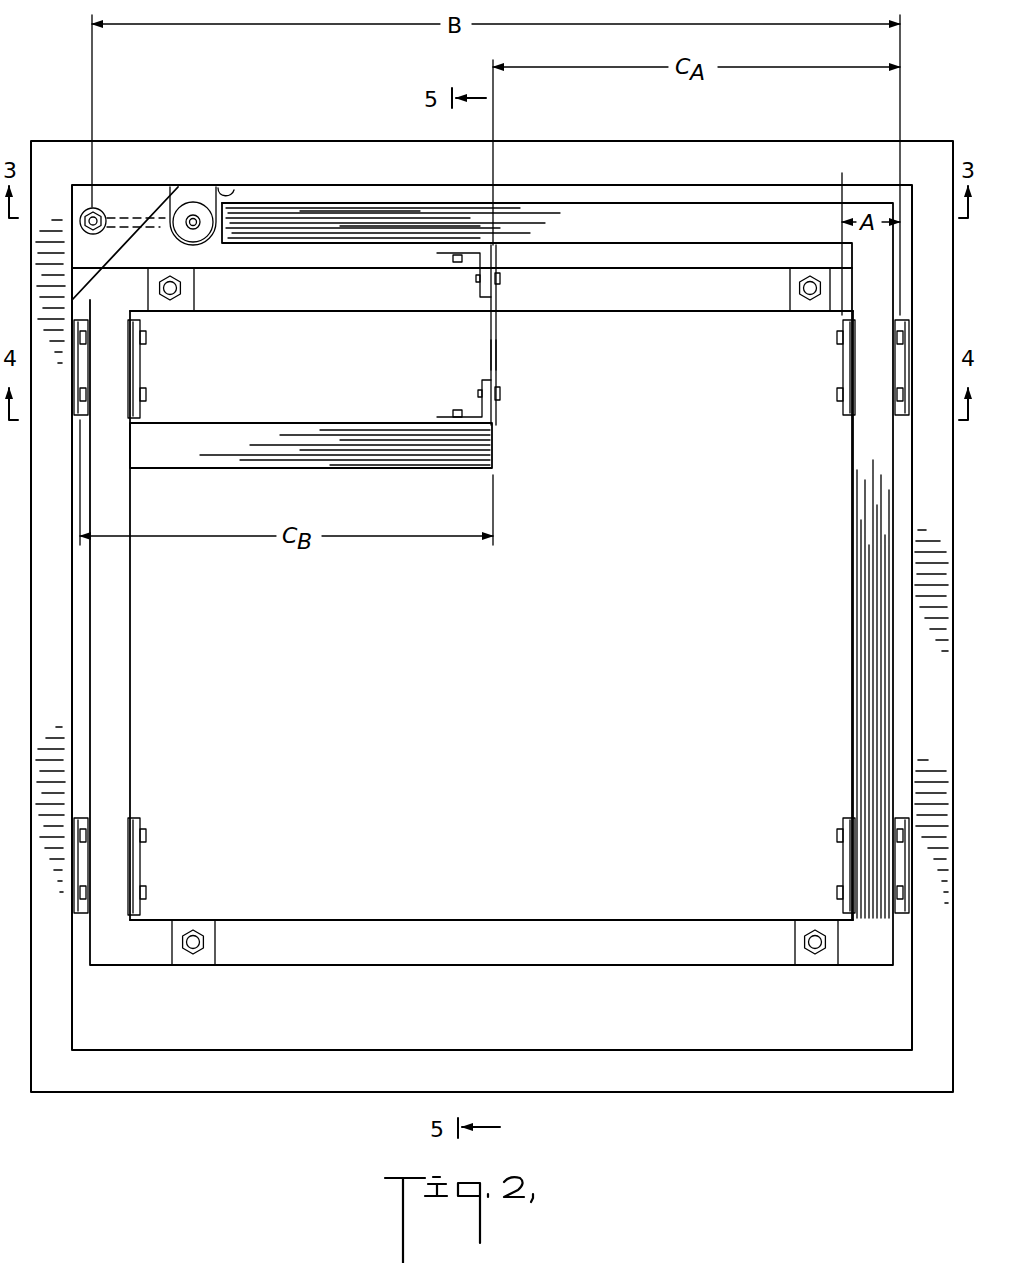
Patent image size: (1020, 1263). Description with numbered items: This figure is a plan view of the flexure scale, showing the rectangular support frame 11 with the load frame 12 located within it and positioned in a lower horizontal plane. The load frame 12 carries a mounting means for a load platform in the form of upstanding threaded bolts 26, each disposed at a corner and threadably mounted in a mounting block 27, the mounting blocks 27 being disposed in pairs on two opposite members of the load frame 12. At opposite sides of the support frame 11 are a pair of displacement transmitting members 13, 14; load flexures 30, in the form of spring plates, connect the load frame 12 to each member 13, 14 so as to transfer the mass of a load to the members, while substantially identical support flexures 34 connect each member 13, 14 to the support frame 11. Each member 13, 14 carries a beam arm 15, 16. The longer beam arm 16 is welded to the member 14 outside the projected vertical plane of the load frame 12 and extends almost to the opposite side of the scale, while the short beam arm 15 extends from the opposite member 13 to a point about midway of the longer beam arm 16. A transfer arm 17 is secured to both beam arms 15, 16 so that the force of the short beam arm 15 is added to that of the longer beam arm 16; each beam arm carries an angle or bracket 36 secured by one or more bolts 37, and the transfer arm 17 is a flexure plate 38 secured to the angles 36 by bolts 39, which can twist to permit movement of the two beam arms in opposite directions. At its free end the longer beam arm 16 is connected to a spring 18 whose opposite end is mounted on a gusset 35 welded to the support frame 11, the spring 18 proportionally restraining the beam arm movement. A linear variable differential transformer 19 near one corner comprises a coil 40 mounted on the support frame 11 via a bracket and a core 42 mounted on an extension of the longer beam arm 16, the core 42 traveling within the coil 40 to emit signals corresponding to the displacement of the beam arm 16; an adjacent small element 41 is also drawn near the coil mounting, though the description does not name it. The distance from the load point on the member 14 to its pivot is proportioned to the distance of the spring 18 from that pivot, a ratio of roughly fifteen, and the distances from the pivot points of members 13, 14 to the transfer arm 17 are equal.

The support frame 11 is at (655, 138).
The load frame 12 is at (462, 920).
The displacement transmitting member 13 is at (118, 696).
The displacement transmitting member 14 is at (855, 712).
The beam arm 15 is at (355, 460).
The beam arm 16 is at (578, 210).
The transfer arm 17 is at (532, 390).
The spring 18 is at (100, 212).
The linear variable differential transformer 19 is at (203, 246).
The threaded bolt 26 is at (176, 296).
The mounting block 27 is at (215, 920).
The load flexure 30 is at (148, 370).
The support flexure 34 is at (895, 378).
The gusset 35 is at (118, 257).
The angle or bracket 36 is at (437, 253).
The bolt 37 is at (458, 263).
The flexure plate 38 is at (492, 358).
The bolt 39 is at (502, 288).
The coil 40 is at (232, 228).
The hook 41 is at (237, 189).
The core 42 is at (194, 215).